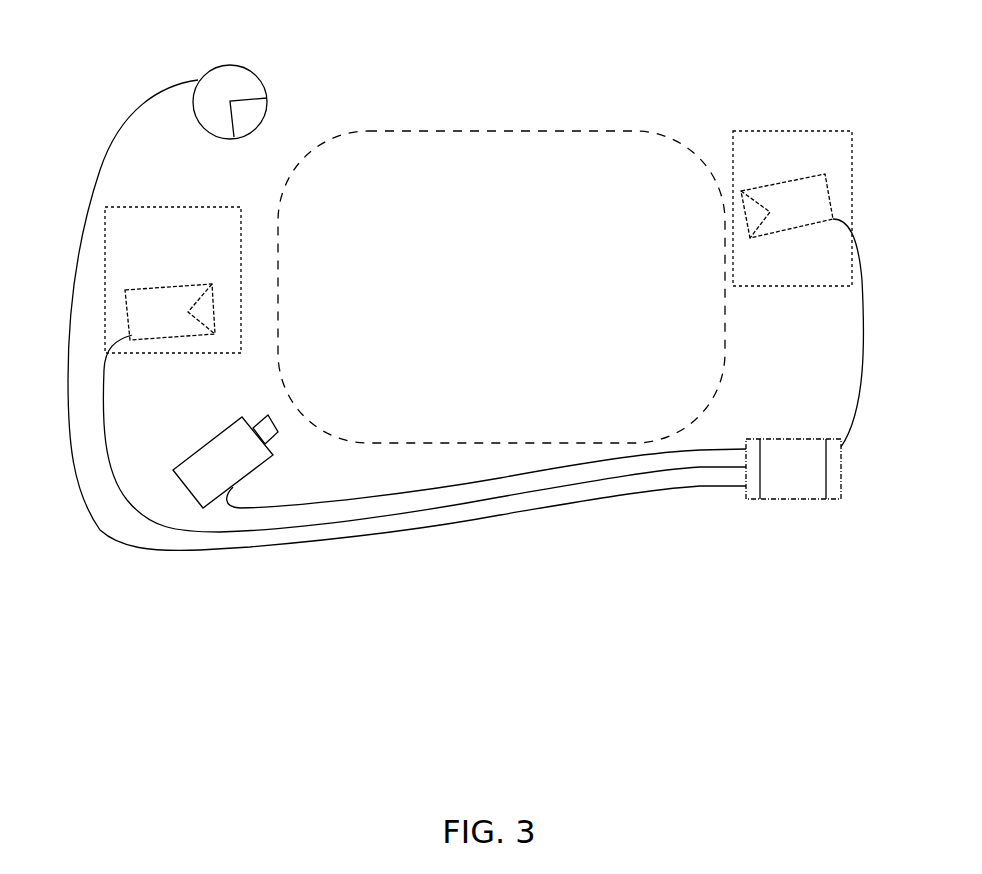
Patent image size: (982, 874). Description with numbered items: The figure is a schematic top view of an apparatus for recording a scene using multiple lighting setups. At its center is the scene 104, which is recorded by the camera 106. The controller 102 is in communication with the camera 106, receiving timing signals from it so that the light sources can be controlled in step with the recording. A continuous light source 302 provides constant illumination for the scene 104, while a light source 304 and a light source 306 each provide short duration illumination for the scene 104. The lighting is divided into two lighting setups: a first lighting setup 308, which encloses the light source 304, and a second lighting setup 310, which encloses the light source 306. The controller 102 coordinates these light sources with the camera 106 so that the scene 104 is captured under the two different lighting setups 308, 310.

The controller 102 is at (793, 490).
The scene 104 is at (513, 301).
The camera 106 is at (210, 452).
The continuous light source 302 is at (245, 79).
The light source 304 is at (158, 297).
The light source 306 is at (797, 215).
The first lighting setup 308 is at (154, 184).
The second lighting setup 310 is at (768, 112).